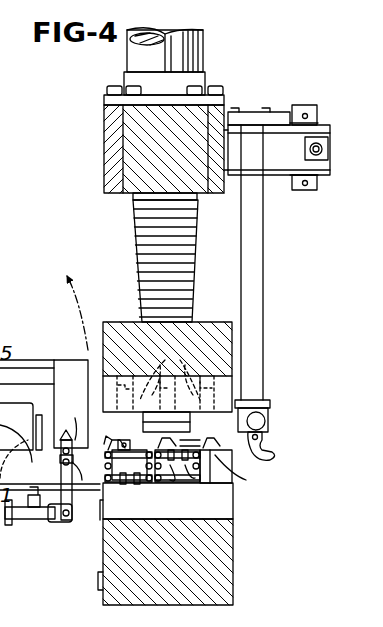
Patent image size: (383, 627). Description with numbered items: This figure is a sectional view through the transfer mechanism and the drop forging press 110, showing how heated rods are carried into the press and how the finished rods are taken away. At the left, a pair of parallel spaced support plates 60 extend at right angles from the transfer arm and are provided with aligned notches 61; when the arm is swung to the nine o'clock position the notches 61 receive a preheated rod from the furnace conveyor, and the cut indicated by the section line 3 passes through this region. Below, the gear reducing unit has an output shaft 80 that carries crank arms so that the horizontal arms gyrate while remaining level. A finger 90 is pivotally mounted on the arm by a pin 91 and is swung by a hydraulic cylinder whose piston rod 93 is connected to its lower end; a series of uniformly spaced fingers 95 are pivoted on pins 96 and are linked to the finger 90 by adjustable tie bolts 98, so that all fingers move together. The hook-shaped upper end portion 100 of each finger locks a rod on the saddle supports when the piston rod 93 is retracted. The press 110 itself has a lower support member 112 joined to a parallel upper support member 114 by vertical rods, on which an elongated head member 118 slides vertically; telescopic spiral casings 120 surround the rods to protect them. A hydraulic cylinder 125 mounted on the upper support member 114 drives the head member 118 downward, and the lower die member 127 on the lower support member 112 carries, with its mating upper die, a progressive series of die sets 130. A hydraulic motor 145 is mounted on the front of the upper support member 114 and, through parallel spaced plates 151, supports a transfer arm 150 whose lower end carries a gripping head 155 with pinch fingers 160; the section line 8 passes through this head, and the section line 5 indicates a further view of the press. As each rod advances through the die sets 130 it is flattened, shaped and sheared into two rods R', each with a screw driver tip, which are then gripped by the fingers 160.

The section line 5— 5 is at (348, 28).
The section line 8— 8 is at (227, 421).
The section line 3— 3 is at (95, 332).
The support plates 60 is at (75, 365).
The notches 61 is at (71, 417).
The output shaft 80 is at (10, 466).
The fingers 90 is at (72, 525).
The pins 91 is at (81, 479).
The piston rod 93 is at (27, 532).
The fingers 95 is at (206, 483).
The pins 96 is at (172, 482).
The adjustable tie bolts 98 is at (125, 482).
The upper end portion 100 is at (121, 439).
The drop forging press 110 is at (237, 532).
The lower support member 112 is at (226, 565).
The upper support member 114 is at (128, 135).
The head member 118 is at (210, 332).
The telescopic spiral casings 120 is at (146, 250).
The hydraulic cylinder 125 is at (130, 60).
The lower die member 127 is at (235, 516).
The die sets 130 is at (170, 369).
The hydraulic motors 145 is at (297, 163).
The transfer arm 150 is at (264, 238).
The plates 151 is at (275, 115).
The gripping head 155 is at (273, 402).
The pinch fingers 160 is at (272, 456).
The rods R' is at (237, 479).